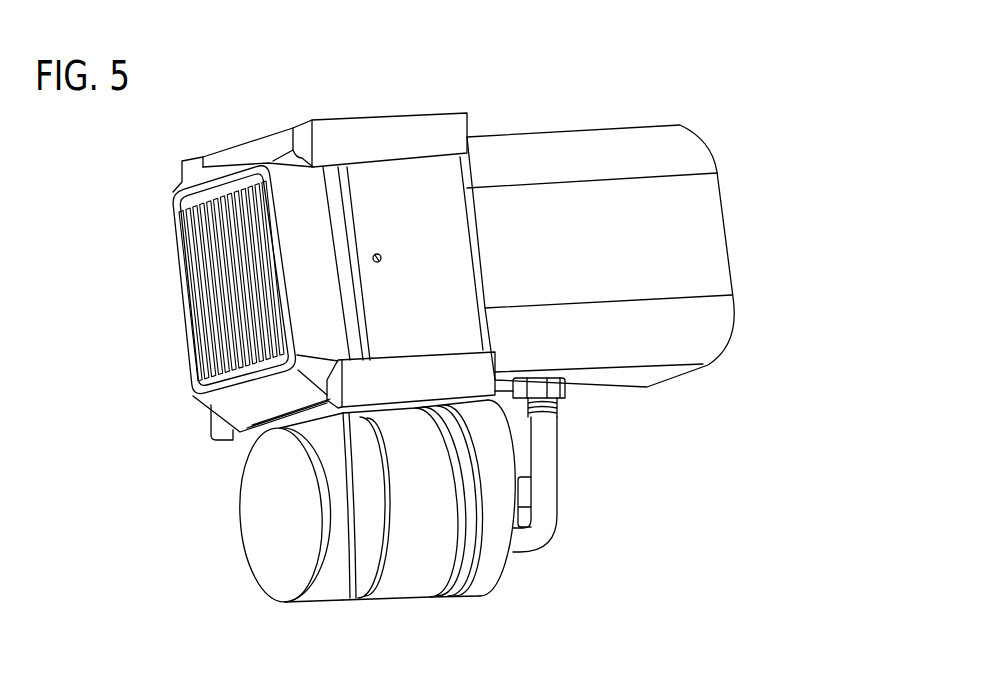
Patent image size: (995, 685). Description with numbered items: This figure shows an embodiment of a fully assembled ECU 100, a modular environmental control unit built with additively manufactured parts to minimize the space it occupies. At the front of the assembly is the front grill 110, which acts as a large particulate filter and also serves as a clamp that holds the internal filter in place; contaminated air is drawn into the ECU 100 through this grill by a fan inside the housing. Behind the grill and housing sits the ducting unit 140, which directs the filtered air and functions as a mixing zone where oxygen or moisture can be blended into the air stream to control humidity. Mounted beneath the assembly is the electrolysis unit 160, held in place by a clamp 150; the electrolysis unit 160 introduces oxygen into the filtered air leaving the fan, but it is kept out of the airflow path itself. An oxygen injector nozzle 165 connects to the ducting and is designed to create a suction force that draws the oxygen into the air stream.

The ECU 100 is at (733, 46).
The front grill 110 is at (181, 303).
The ducting unit 140 is at (566, 133).
The clamp 150 is at (356, 603).
The electrolysis unit 160 is at (241, 516).
The oxygen injector nozzle 165 is at (561, 468).